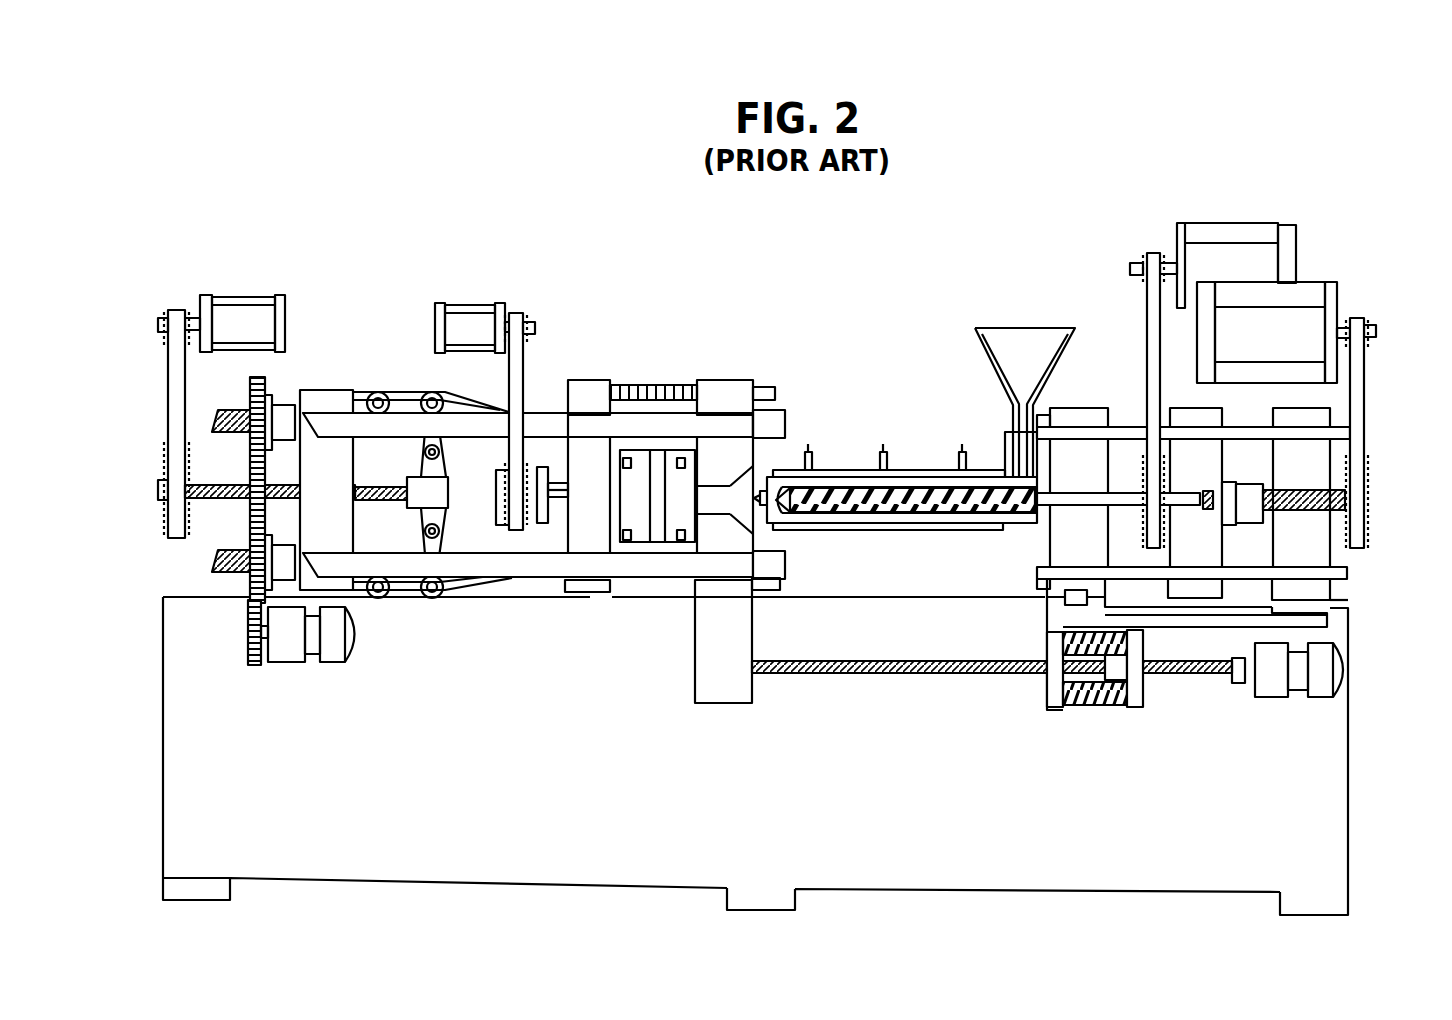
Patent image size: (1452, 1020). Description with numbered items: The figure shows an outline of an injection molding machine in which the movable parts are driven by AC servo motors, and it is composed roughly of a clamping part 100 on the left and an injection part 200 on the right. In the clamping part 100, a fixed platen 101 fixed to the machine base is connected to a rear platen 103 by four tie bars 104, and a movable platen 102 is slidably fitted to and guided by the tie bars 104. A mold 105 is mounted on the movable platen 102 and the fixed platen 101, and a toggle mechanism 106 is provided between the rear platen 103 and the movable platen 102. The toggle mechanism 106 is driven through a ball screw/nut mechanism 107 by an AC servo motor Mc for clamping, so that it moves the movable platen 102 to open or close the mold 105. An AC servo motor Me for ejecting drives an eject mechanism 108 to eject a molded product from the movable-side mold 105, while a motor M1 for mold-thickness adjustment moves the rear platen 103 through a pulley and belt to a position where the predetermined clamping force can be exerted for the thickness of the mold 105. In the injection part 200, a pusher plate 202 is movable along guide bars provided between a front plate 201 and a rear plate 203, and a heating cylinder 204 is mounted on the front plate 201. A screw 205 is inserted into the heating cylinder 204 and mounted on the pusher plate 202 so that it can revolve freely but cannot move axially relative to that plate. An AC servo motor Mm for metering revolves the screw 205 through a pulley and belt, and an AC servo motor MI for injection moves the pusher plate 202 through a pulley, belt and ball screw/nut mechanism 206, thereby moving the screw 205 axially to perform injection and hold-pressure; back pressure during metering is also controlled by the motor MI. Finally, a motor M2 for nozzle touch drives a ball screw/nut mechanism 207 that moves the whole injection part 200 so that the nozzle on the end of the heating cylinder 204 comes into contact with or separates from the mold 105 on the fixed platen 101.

The clamping part 100 is at (463, 232).
The injection part 200 is at (1037, 228).
The fixed platen 101 is at (722, 702).
The movable platen 102 is at (590, 581).
The rear platen 103 is at (343, 580).
The tie bars 104 is at (415, 427).
The mold 105 is at (665, 536).
The toggle mechanism 106 is at (463, 603).
The ball screw/nut mechanism 107 is at (416, 510).
The eject mechanism 108 is at (541, 470).
The AC servo motor for clamping Mc is at (277, 328).
The AC servo motor for ejecting Me is at (437, 322).
The motor for mold-thickness adjustment M1 is at (290, 650).
The front plate 201 is at (1078, 415).
The pusher plate 202 is at (1196, 586).
The rear plate 203 is at (1315, 543).
The heating cylinder 204 is at (828, 478).
The screw 205 is at (915, 488).
The ball screw/nut mechanism 206 is at (1258, 500).
The ball screw/nut mechanism 207 is at (1141, 687).
The AC servo motor for metering Mm is at (1290, 251).
The AC servo motor for injection MI is at (1336, 306).
The motor for nozzle touch M2 is at (1272, 668).